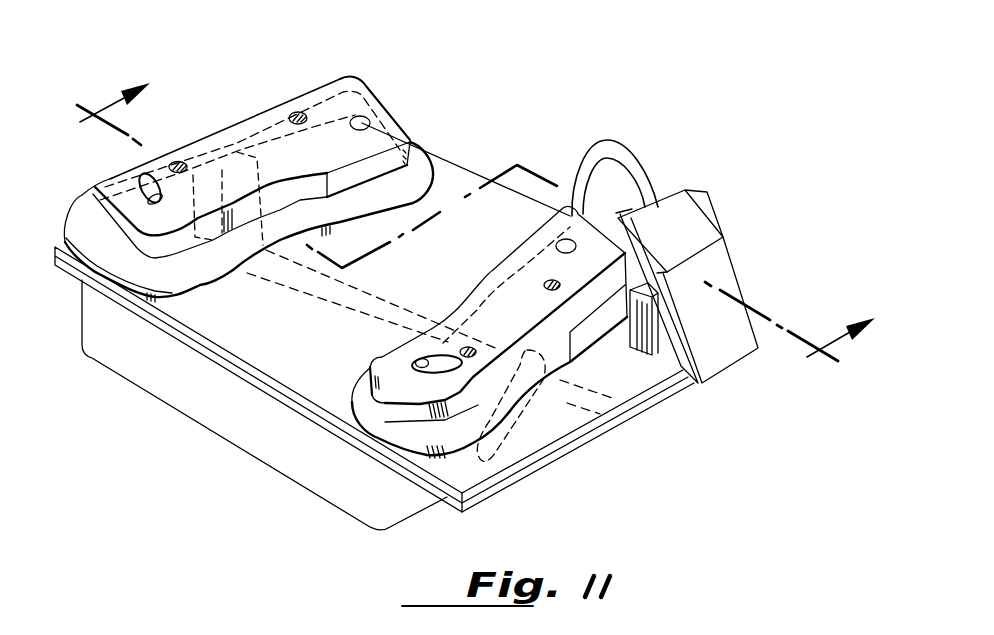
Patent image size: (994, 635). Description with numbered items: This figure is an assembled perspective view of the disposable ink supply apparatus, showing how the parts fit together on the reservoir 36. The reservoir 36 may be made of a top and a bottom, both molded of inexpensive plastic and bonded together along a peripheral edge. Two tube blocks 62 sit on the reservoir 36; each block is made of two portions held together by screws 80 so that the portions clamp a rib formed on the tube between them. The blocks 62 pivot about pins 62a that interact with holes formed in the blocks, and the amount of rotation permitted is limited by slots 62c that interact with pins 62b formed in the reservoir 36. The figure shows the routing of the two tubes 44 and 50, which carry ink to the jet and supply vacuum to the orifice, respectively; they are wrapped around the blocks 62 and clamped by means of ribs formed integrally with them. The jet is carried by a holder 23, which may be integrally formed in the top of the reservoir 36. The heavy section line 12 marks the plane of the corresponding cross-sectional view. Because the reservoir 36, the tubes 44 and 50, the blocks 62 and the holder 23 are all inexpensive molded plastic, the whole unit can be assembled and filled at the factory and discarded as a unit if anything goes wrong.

The cross-sectional view line 12 is at (486, 211).
The ink jet holder 23 is at (738, 264).
The reservoir 36 is at (300, 447).
The tube 44 is at (627, 158).
The tube 50 is at (423, 170).
The tube block 62 is at (357, 82).
The pin 62a is at (364, 121).
The pin 62b is at (163, 198).
The slot 62c is at (139, 180).
The screw 80 is at (293, 114).